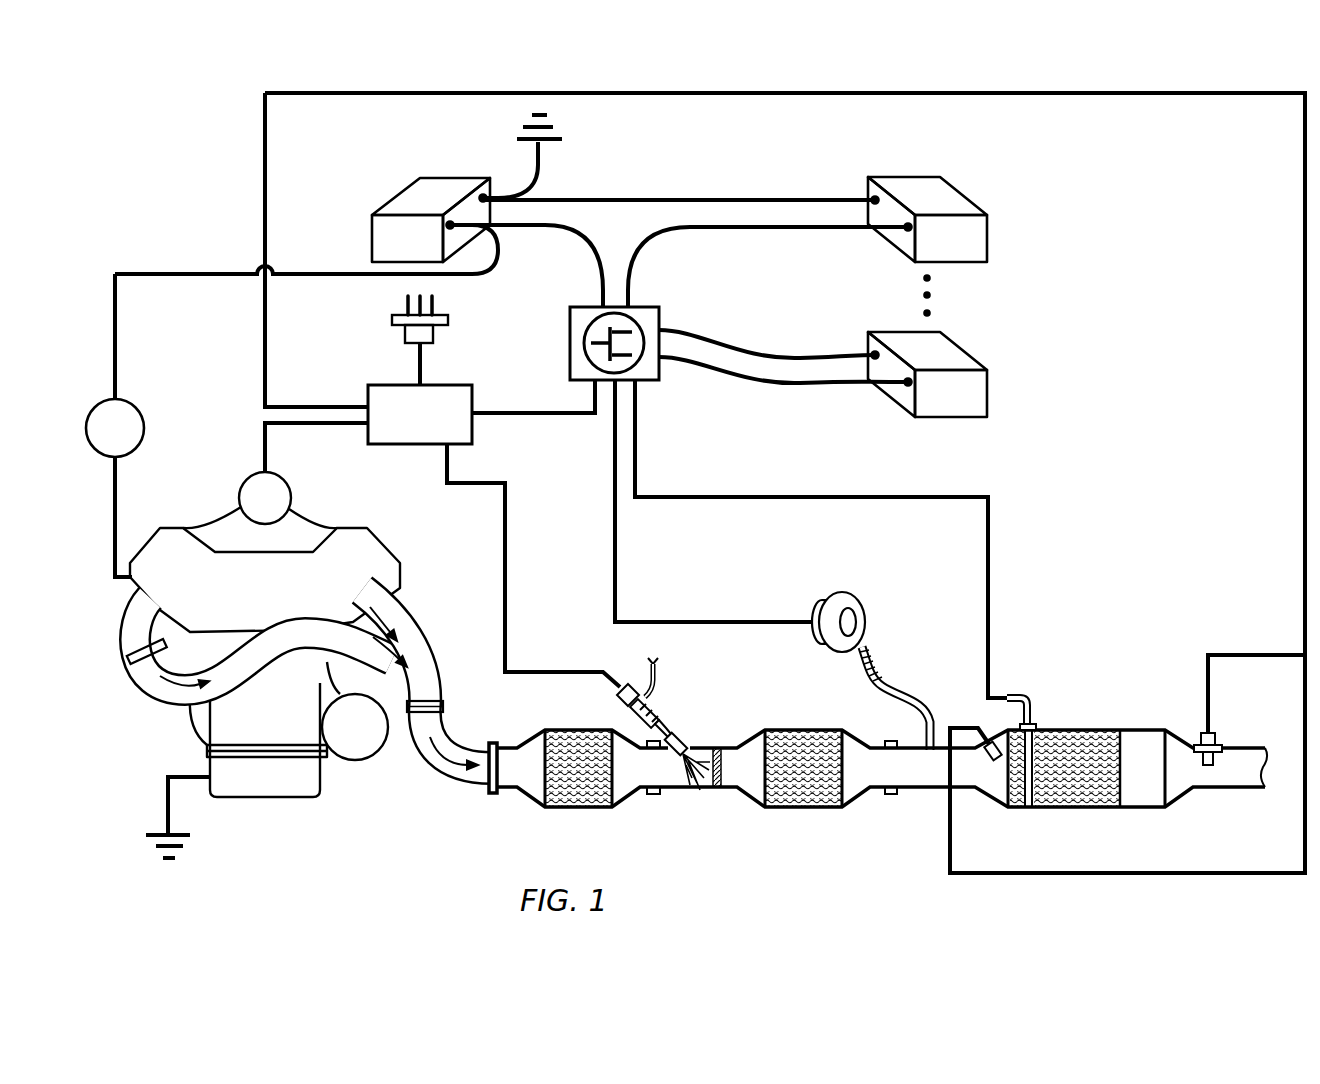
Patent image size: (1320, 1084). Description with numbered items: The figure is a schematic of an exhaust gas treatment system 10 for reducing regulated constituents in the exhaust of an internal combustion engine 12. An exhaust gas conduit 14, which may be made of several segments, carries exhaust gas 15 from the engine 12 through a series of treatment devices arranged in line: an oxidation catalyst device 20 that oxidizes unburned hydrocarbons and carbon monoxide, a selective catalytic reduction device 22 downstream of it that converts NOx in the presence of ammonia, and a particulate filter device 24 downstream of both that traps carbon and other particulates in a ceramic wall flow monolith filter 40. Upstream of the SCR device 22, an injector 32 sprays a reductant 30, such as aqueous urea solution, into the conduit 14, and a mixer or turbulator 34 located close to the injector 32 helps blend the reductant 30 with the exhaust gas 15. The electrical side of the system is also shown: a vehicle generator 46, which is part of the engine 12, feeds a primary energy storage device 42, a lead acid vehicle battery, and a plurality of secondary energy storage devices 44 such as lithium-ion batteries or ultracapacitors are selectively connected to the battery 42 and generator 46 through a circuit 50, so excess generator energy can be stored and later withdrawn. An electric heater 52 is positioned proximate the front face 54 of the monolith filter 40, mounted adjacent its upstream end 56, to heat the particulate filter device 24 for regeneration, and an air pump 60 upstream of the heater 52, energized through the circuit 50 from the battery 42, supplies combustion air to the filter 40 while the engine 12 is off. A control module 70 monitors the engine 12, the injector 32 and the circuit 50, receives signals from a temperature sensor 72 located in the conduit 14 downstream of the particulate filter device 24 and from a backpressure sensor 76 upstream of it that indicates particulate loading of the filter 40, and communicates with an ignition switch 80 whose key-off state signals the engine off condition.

The exhaust gas treatment system 10 is at (716, 851).
The internal combustion engine 12 is at (357, 527).
The exhaust gas conduit 14 is at (140, 705).
The exhaust gas 15 is at (430, 752).
The oxidation catalyst device 20 is at (571, 819).
The selective catalytic reduction device 22 is at (799, 819).
The particulate filter device 24 is at (1082, 718).
The reductant 30 is at (682, 765).
The injector 32 is at (657, 718).
The mixer or turbulator 34 is at (723, 763).
The monolith filter 40 is at (1080, 772).
The primary energy storage device 42 is at (431, 220).
The secondary energy storage devices 44 is at (927, 297).
The vehicle generator 46 is at (115, 428).
The circuit 50 is at (570, 333).
The electric heater 52 is at (1044, 718).
The front face 54 is at (1004, 770).
The upstream end 56 is at (1028, 823).
The air pump 60 is at (889, 651).
The control module 70 is at (420, 414).
The temperature sensor 72 is at (1212, 733).
The backpressure sensor 76 is at (990, 745).
The ignition switch 80 is at (438, 332).